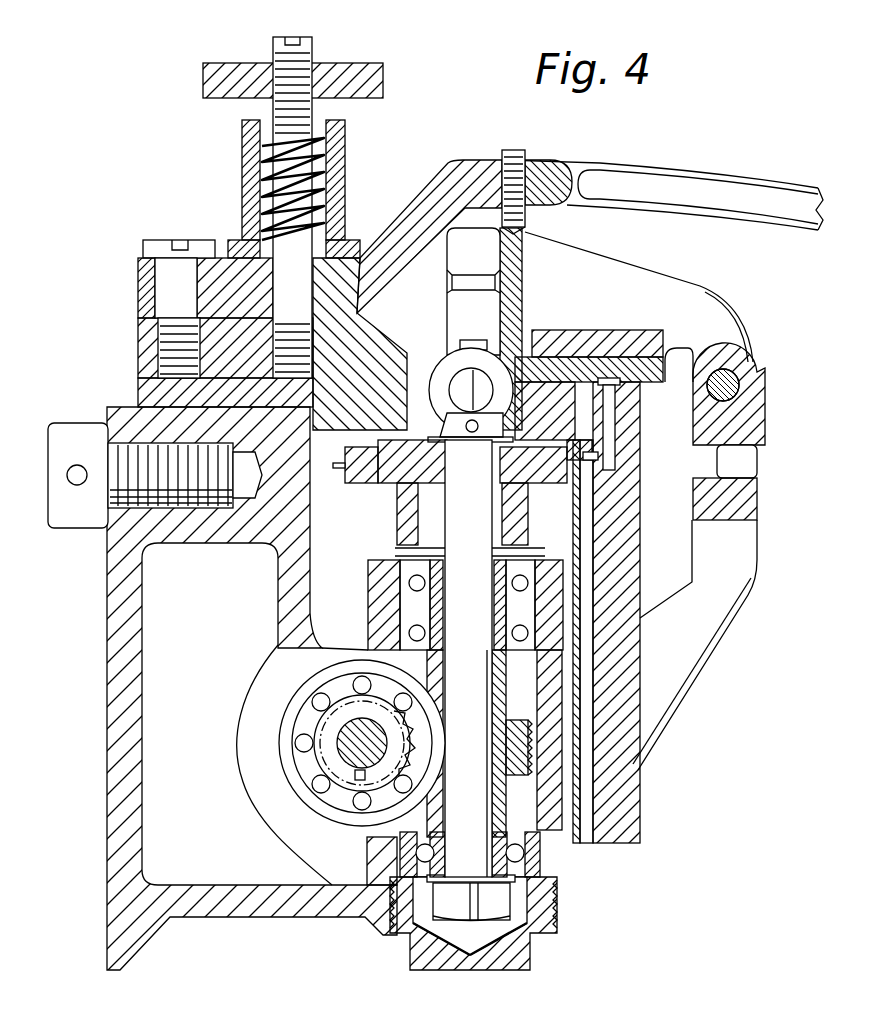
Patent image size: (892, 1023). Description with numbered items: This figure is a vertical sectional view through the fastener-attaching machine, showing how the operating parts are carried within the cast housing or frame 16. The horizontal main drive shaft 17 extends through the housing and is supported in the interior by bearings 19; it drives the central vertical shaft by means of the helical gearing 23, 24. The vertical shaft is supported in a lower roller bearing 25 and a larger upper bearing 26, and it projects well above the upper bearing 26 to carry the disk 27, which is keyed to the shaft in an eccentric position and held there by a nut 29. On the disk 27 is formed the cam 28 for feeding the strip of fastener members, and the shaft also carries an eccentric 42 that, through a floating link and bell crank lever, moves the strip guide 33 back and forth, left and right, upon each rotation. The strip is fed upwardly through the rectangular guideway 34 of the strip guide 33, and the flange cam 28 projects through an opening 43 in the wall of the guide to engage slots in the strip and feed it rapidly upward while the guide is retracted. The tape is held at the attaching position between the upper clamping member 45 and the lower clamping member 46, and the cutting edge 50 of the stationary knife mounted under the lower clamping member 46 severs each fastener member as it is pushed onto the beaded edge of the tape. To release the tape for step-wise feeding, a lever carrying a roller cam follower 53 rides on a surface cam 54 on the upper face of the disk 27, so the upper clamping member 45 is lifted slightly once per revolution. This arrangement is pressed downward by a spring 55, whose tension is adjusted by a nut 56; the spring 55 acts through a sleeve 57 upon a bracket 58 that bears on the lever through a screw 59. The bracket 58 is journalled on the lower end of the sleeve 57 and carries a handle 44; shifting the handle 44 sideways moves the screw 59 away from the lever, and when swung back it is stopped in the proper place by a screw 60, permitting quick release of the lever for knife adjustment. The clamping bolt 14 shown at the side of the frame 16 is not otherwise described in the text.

The clamping bolt 14 is at (112, 452).
The cast housing or frame 16 is at (297, 910).
The main drive shaft 17 is at (340, 757).
The bearings 19 is at (320, 790).
The helical gearing 23 is at (383, 720).
The helical gearing 24 is at (504, 724).
The lower roller bearing 25 is at (535, 853).
The upper bearing 26 is at (375, 593).
The disk 27 is at (377, 482).
The cam 28 is at (335, 467).
The nut 29 is at (453, 423).
The strip guide 33 is at (625, 808).
The guideway 34 is at (587, 553).
The eccentric 42 is at (400, 527).
The opening 43 is at (586, 452).
The handle 44 is at (722, 190).
The upper clamping member 45 is at (560, 380).
The lower clamping member 46 is at (530, 345).
The cutting edge 50 is at (622, 393).
The roller cam follower 53 is at (463, 377).
The surface cam 54 is at (600, 432).
The spring 55 is at (255, 178).
The nut 56 is at (355, 63).
The sleeve 57 is at (340, 190).
The bracket 58 is at (463, 173).
The screw 59 is at (525, 227).
The screw 60 is at (165, 250).